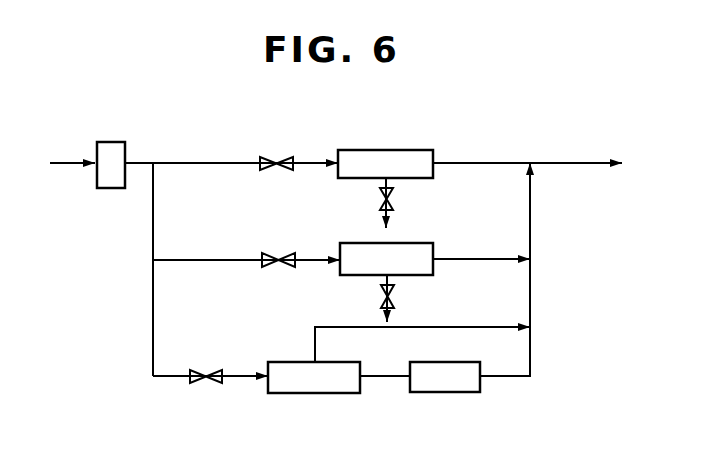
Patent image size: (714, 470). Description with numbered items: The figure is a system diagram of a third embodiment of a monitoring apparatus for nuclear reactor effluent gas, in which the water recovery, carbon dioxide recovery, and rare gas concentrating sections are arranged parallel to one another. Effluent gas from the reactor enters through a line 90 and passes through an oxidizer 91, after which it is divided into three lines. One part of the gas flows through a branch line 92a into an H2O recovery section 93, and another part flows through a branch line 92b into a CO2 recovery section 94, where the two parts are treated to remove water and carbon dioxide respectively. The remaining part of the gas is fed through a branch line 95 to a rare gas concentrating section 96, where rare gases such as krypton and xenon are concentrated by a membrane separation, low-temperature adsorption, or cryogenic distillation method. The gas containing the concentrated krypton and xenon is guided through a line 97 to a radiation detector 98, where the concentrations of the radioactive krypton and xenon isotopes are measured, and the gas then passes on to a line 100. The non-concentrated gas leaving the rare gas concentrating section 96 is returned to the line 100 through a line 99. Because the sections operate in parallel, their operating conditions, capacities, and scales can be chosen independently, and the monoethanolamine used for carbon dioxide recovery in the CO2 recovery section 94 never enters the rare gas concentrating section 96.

The line 90 is at (62, 163).
The oxidizer 91 is at (110, 142).
The branch line 92a is at (202, 163).
The branch line 92b is at (202, 259).
The H2O recovery section 93 is at (386, 150).
The CO2 recovery section 94 is at (411, 244).
The branch line 95 is at (172, 377).
The rare gas concentrating section 96 is at (331, 393).
The line 97 is at (383, 377).
The radiation detector 98 is at (463, 392).
The line 99 is at (476, 327).
The line 100 is at (575, 162).